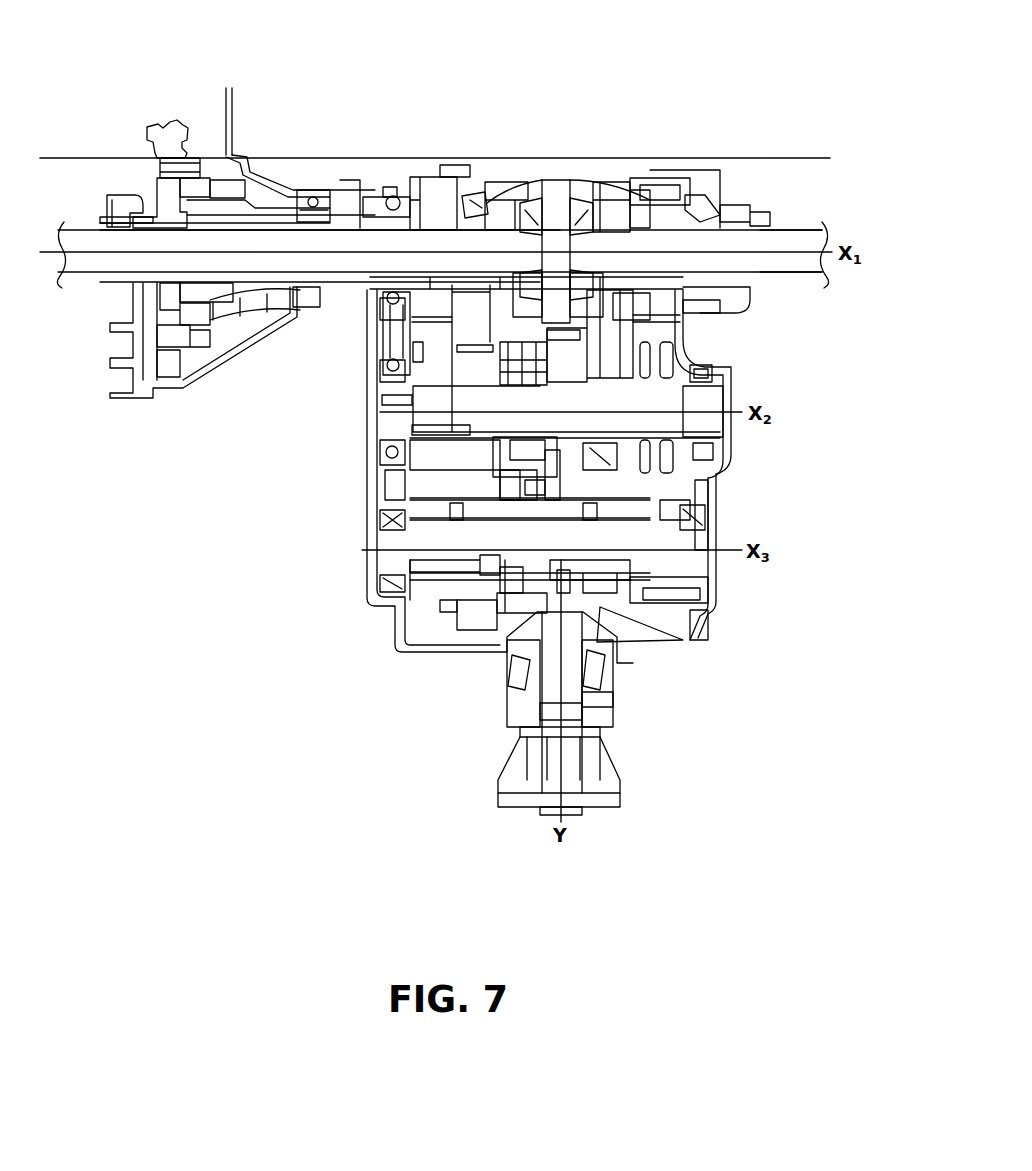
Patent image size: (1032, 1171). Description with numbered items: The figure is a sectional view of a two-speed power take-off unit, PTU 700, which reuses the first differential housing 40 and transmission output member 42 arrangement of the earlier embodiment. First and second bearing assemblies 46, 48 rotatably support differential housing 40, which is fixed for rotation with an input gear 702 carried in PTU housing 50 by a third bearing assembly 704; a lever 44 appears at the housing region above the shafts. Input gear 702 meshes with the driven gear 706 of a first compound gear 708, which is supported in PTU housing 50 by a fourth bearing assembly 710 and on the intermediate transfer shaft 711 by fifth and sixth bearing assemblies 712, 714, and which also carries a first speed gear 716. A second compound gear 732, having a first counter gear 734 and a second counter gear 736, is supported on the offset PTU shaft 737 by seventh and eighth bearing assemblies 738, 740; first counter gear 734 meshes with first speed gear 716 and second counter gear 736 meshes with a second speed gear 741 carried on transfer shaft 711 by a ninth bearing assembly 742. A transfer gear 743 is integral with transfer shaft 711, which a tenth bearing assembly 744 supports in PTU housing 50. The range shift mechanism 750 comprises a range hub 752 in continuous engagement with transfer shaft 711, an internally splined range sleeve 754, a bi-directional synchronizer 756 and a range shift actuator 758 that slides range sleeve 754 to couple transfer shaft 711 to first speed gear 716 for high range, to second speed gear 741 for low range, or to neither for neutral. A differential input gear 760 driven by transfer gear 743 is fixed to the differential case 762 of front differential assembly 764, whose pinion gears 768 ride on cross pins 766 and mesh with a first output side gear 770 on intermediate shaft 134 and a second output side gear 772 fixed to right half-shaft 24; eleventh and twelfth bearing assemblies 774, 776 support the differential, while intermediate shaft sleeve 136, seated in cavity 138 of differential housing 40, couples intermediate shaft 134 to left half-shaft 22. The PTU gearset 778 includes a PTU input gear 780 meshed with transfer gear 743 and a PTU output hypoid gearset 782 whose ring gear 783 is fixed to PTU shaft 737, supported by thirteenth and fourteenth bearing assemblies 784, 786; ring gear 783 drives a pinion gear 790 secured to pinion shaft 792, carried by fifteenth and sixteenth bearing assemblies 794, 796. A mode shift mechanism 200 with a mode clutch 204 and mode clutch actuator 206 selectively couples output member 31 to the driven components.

The PTU 700 is at (665, 38).
The left half-shaft 22 is at (88, 268).
The right half-shaft 24 is at (802, 272).
The output member 42 is at (168, 118).
The lever 44 is at (270, 156).
The differential housing 40 is at (200, 198).
The second bearing assembly 48 is at (312, 195).
The first bearing assembly 46 is at (103, 212).
The cavity 138 is at (248, 219).
The PTU housing 50 is at (388, 170).
The input gear 702 is at (425, 200).
The eleventh bearing assembly 774 is at (480, 195).
The front differential assembly 764 is at (520, 190).
The differential case 762 is at (550, 195).
The first output side gear 770 is at (570, 190).
The cross pin 766 is at (600, 188).
The pinion gear 768 is at (650, 186).
The second output side gear 772 is at (665, 200).
The differential input gear 760 is at (705, 203).
The twelfth bearing assembly 776 is at (750, 218).
The intermediate shaft 134 is at (250, 262).
The intermediate shaft sleeve 136 is at (232, 300).
The third bearing assembly 704 is at (412, 277).
The driven gear 706 is at (378, 329).
The first compound gear 708 is at (378, 384).
The first speed gear 716 is at (405, 400).
The fifth bearing assembly 712 is at (412, 430).
The fourth bearing assembly 710 is at (392, 456).
The sixth bearing assembly 714 is at (400, 486).
The range sleeve 754 is at (378, 521).
The thirteenth bearing assembly 784 is at (380, 582).
The seventh bearing assembly 738 is at (480, 565).
The second speed gear 741 is at (553, 347).
The range hub 752 is at (528, 445).
The ninth bearing assembly 742 is at (615, 443).
The range shift actuator 758 is at (512, 500).
The bi-directional synchronizer 756 is at (560, 470).
The range shift mechanism 750 is at (540, 512).
The transfer gear 743 is at (700, 327).
The tenth bearing assembly 744 is at (712, 370).
The transfer shaft 711 is at (700, 398).
The PTU input gear 780 is at (668, 512).
The fourteenth bearing assembly 786 is at (705, 515).
The PTU shaft 737 is at (700, 540).
The PTU gearset 778 is at (728, 574).
The PTU output hypoid gearset 782 is at (680, 620).
The ring gear 783 is at (640, 630).
The pinion gear 790 is at (610, 657).
The fifteenth bearing assembly 794 is at (605, 668).
The pinion shaft 792 is at (592, 688).
The sixteenth bearing assembly 796 is at (577, 692).
The mode shift mechanism 200 is at (572, 720).
The mode clutch 204 is at (548, 710).
The output member 31 is at (505, 775).
The mode clutch actuator 206 is at (548, 737).
The eighth bearing assembly 740 is at (575, 590).
The second counter gear 736 is at (462, 572).
The first counter gear 734 is at (466, 612).
The second compound gear 732 is at (520, 594).